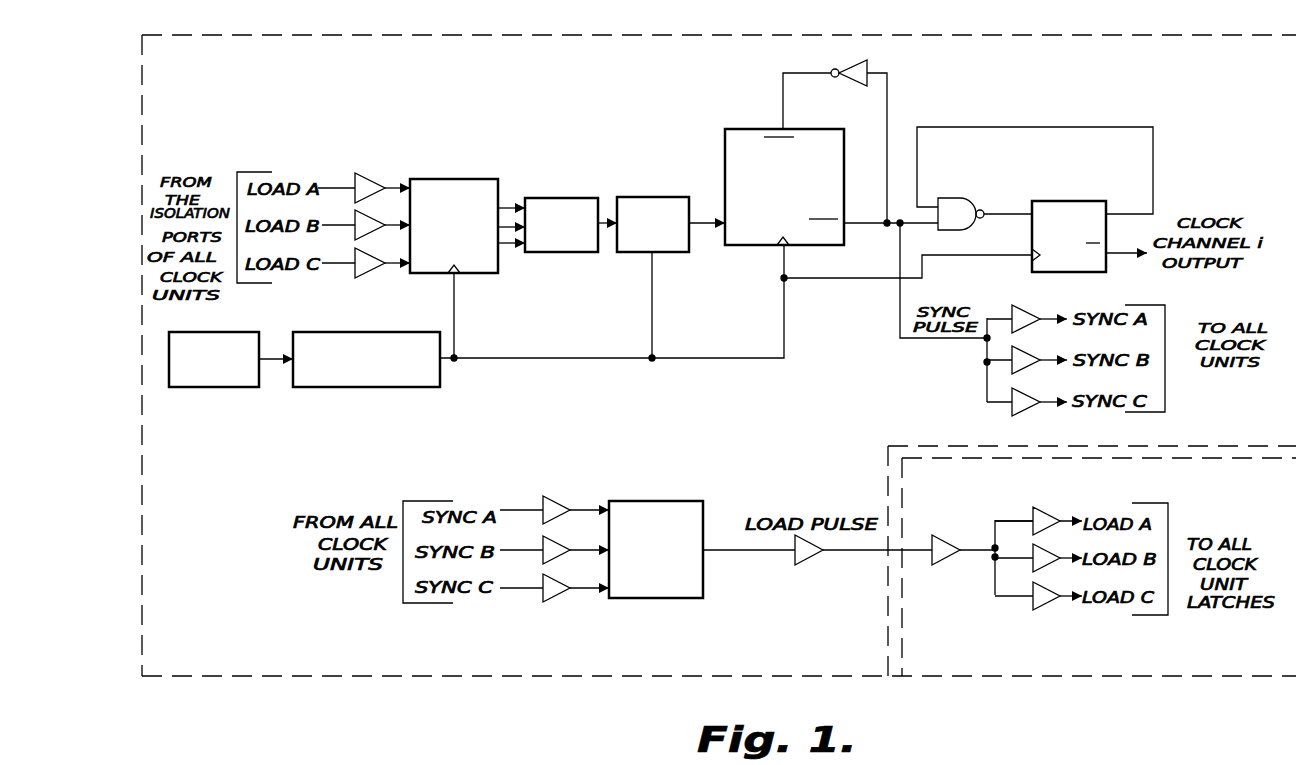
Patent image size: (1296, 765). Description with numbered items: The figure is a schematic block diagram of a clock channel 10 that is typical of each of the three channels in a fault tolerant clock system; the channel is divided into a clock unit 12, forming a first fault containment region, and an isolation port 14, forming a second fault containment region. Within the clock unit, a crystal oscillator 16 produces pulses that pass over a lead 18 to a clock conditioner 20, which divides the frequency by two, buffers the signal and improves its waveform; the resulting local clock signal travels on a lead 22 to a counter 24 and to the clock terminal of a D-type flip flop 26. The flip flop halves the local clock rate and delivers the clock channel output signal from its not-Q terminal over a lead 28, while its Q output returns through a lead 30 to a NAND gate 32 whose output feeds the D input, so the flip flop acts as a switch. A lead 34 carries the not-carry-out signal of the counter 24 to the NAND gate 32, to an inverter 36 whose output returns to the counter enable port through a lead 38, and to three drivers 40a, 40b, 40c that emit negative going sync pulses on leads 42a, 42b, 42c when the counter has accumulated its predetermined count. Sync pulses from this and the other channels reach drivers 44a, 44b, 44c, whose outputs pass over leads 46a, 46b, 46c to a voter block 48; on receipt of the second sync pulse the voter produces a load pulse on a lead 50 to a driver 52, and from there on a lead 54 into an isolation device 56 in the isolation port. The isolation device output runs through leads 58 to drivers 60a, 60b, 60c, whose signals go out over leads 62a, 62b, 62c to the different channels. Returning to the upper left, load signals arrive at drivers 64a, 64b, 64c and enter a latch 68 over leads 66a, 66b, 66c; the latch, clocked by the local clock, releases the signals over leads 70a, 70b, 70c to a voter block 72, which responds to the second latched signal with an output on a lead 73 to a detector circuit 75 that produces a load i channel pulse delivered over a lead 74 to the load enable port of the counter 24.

The clock channel 10 is at (333, 693).
The clock unit 12 is at (736, 668).
The isolation port 14 is at (1278, 670).
The crystal oscillator 16 is at (207, 387).
The lead 18 is at (278, 363).
The clock conditioner 20 is at (357, 388).
The lead 22 is at (483, 358).
The counter 24 is at (725, 145).
The D-type flip flop 26 is at (1075, 201).
The lead 28 is at (1125, 255).
The lead 30 is at (1080, 127).
The NAND gate 32 is at (960, 198).
The lead 34 is at (887, 112).
The inverter 36 is at (850, 68).
The lead 38 is at (783, 105).
The driver 40a is at (1020, 308).
The driver 40b is at (1034, 372).
The driver 40c is at (1012, 408).
The lead 42a is at (1048, 318).
The lead 42b is at (1046, 359).
The lead 42c is at (1046, 404).
The driver 44a is at (552, 496).
The driver 44b is at (544, 549).
The driver 44c is at (552, 600).
The lead 46a is at (582, 508).
The lead 46b is at (584, 549).
The lead 46c is at (584, 587).
The voter block 48 is at (658, 501).
The lead 50 is at (743, 552).
The driver 52 is at (797, 566).
The lead 54 is at (870, 552).
The isolation device 56 is at (945, 538).
The leads 58 is at (994, 518).
The driver 60a is at (1038, 506).
The driver 60b is at (1046, 555).
The driver 60c is at (1033, 604).
The lead 62a is at (330, 186).
The lead 62b is at (340, 224).
The lead 62c is at (338, 264).
The driver 64a is at (370, 186).
The driver 64b is at (362, 240).
The driver 64c is at (364, 278).
The lead 66a is at (394, 186).
The lead 66b is at (391, 224).
The lead 66c is at (387, 268).
The latch 68 is at (460, 179).
The lead 70a is at (508, 207).
The lead 70b is at (513, 226).
The lead 70c is at (510, 246).
The voter block 72 is at (575, 253).
The lead 73 is at (606, 221).
The lead 74 is at (705, 210).
The detector circuit 75 is at (638, 196).